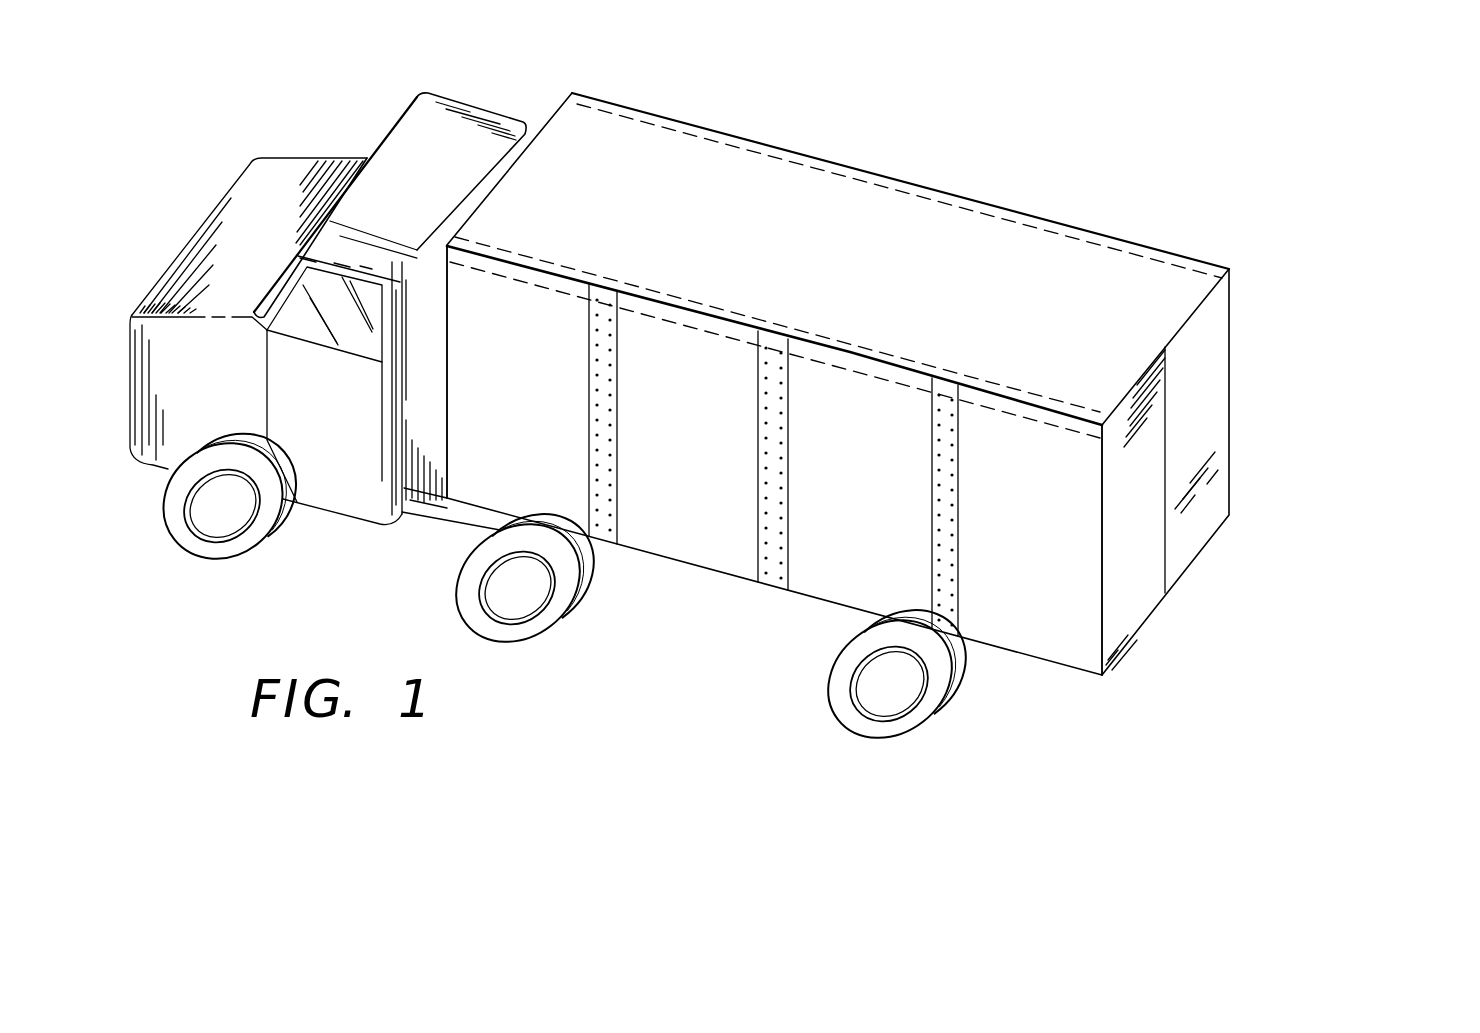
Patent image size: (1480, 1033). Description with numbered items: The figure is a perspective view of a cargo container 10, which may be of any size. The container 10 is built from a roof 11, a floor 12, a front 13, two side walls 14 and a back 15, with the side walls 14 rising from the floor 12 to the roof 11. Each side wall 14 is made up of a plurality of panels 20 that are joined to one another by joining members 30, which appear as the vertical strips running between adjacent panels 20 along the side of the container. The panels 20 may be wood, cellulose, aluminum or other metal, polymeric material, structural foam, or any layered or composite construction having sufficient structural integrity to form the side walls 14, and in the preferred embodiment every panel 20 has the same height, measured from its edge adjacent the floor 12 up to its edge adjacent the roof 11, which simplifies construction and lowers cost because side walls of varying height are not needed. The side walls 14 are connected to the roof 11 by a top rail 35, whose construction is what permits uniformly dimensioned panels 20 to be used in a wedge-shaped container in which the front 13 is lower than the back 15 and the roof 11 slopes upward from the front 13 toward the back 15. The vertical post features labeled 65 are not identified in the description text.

The cargo container 10 is at (798, 403).
The roof 11 is at (846, 382).
The floor 12 is at (1126, 648).
The front 13 is at (549, 115).
The side walls 14 is at (1233, 378).
The back 15 is at (1193, 428).
The panels 20 is at (570, 508).
The joining members 30 is at (593, 483).
The top rail 35 is at (957, 202).
The logistics posts 65 is at (611, 363).